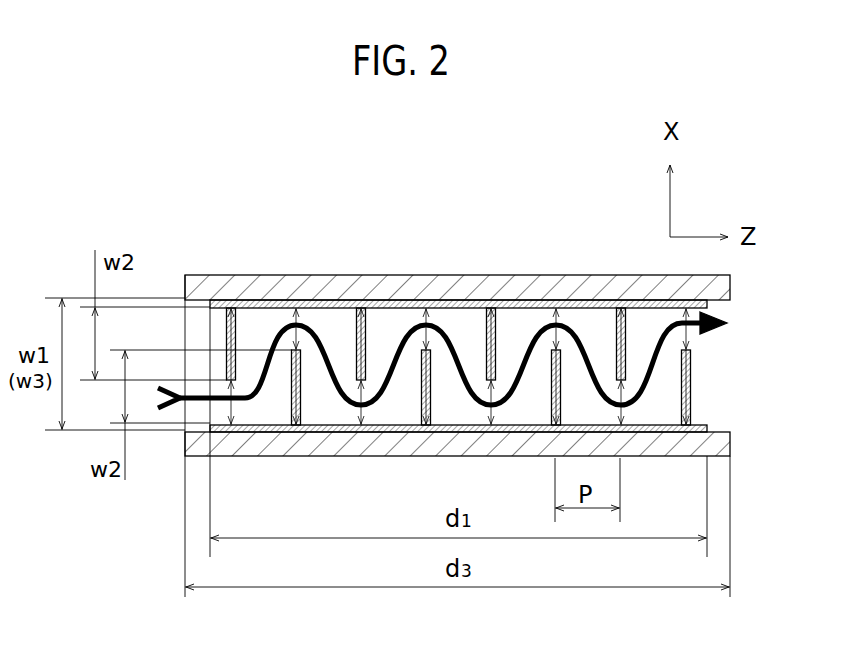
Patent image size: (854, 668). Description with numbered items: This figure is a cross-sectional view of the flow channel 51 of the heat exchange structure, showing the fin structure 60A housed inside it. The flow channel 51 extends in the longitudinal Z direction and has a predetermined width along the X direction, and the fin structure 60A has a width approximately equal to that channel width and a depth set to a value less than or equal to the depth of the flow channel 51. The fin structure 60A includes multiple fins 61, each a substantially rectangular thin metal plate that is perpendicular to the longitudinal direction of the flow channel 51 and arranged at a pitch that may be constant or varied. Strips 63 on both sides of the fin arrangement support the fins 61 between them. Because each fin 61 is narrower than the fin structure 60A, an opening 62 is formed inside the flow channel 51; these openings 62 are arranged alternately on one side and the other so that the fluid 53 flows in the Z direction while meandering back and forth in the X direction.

The flow channel 51 is at (707, 368).
The fluid 53 is at (657, 340).
The fin structure 60A is at (212, 337).
The fin 61 is at (321, 340).
The opening 62 is at (317, 350).
The strip 63 is at (540, 300).